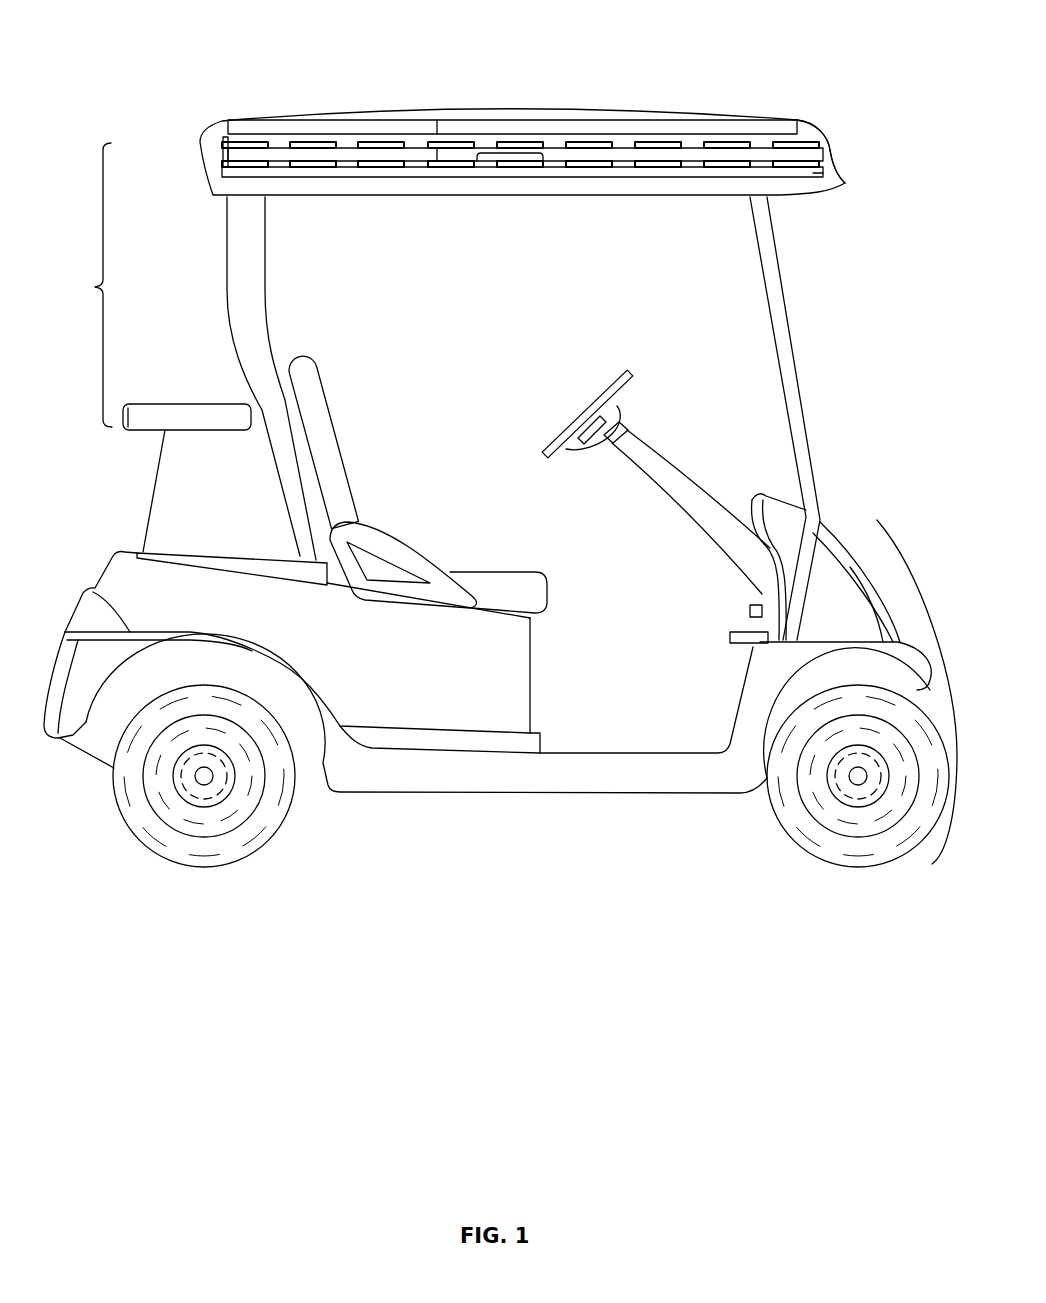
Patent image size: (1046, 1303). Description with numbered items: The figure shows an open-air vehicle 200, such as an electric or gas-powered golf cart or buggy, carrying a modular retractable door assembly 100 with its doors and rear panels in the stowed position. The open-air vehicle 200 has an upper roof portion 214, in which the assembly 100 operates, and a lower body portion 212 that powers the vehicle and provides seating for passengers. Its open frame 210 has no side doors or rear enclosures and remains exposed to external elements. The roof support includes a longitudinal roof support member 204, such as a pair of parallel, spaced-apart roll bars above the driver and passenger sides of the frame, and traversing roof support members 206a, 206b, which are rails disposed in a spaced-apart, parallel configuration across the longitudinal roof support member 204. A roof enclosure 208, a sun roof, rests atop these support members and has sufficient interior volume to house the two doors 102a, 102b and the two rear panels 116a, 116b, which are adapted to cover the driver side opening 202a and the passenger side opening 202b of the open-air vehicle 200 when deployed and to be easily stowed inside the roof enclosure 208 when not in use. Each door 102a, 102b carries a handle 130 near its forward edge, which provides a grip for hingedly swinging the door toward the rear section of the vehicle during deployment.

The modular retractable door assembly 100 is at (222, 123).
The door 102a is at (615, 127).
The door 102b is at (698, 152).
The rear panel 116a is at (258, 127).
The rear panel 116b is at (342, 152).
The handle 130 is at (492, 163).
The open-air vehicle 200 is at (827, 313).
The driver side opening 202a is at (306, 321).
The passenger side opening 202b is at (744, 429).
The longitudinal roof support member 204 is at (797, 155).
The traversing roof support member 206a is at (225, 142).
The traversing roof support member 206b is at (223, 167).
The roof enclosure 208 is at (530, 104).
The open frame 210 is at (810, 488).
The lower body portion 212 is at (877, 522).
The upper roof portion 214 is at (83, 285).